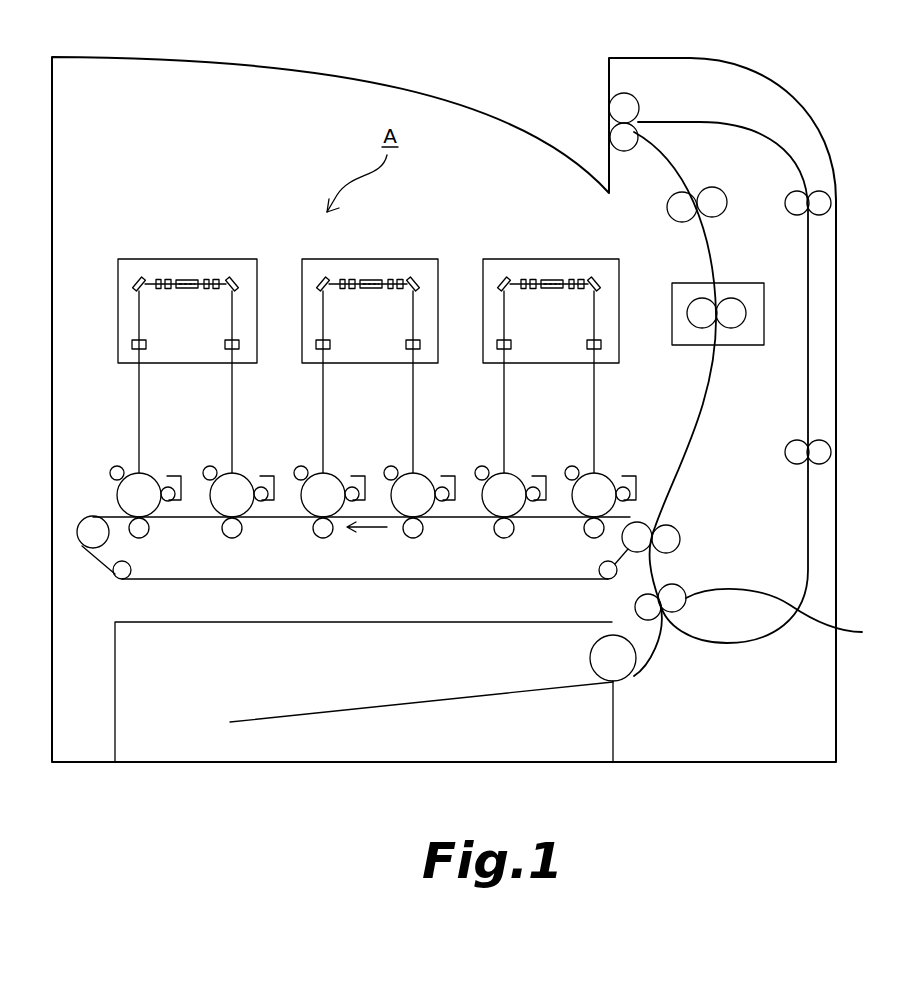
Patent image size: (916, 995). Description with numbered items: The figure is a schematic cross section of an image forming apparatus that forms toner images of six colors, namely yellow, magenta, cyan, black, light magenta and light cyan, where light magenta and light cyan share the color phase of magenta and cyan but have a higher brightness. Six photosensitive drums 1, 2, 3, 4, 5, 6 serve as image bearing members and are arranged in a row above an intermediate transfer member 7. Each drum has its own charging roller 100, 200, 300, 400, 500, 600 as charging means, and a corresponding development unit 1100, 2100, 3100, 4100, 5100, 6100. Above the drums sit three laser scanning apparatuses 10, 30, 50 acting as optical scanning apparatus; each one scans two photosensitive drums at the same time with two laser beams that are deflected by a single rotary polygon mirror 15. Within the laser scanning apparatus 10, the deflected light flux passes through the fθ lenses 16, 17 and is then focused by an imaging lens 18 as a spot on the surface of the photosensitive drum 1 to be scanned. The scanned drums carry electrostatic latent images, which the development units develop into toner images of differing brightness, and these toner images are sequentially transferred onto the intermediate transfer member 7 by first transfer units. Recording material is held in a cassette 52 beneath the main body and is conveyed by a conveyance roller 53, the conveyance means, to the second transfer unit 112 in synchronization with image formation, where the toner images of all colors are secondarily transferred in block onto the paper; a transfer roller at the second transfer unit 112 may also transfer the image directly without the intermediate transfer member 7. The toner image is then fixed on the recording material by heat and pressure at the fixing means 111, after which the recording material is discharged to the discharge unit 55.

The discharge unit 55 is at (440, 88).
The laser scanning apparatus 50 is at (192, 259).
The laser scanning apparatus 30 is at (380, 259).
The laser scanning apparatus 10 is at (539, 302).
The fθ lens 17 is at (523, 278).
The fθ lens 16 is at (533, 278).
The rotary polygon mirror 15 is at (553, 278).
The imaging lens 18 is at (502, 349).
The fixing means 111 is at (765, 318).
The second transfer unit 112 is at (681, 537).
The conveyance roller 53 is at (862, 632).
The cassette 52 is at (376, 726).
The intermediate transfer member 7 is at (502, 579).
The photosensitive drum 6 is at (150, 473).
The photosensitive drum 5 is at (243, 473).
The photosensitive drum 4 is at (334, 473).
The photosensitive drum 3 is at (424, 473).
The photosensitive drum 2 is at (515, 473).
The photosensitive drum 1 is at (605, 473).
The charging roller 600 is at (110, 462).
The charging roller 500 is at (203, 462).
The charging roller 400 is at (294, 462).
The charging roller 300 is at (384, 462).
The charging roller 200 is at (475, 462).
The charging roller 100 is at (565, 462).
The development unit 6100 is at (179, 478).
The development unit 5100 is at (272, 478).
The development unit 4100 is at (363, 478).
The development unit 3100 is at (453, 478).
The development unit 2100 is at (544, 478).
The development unit 1100 is at (634, 478).